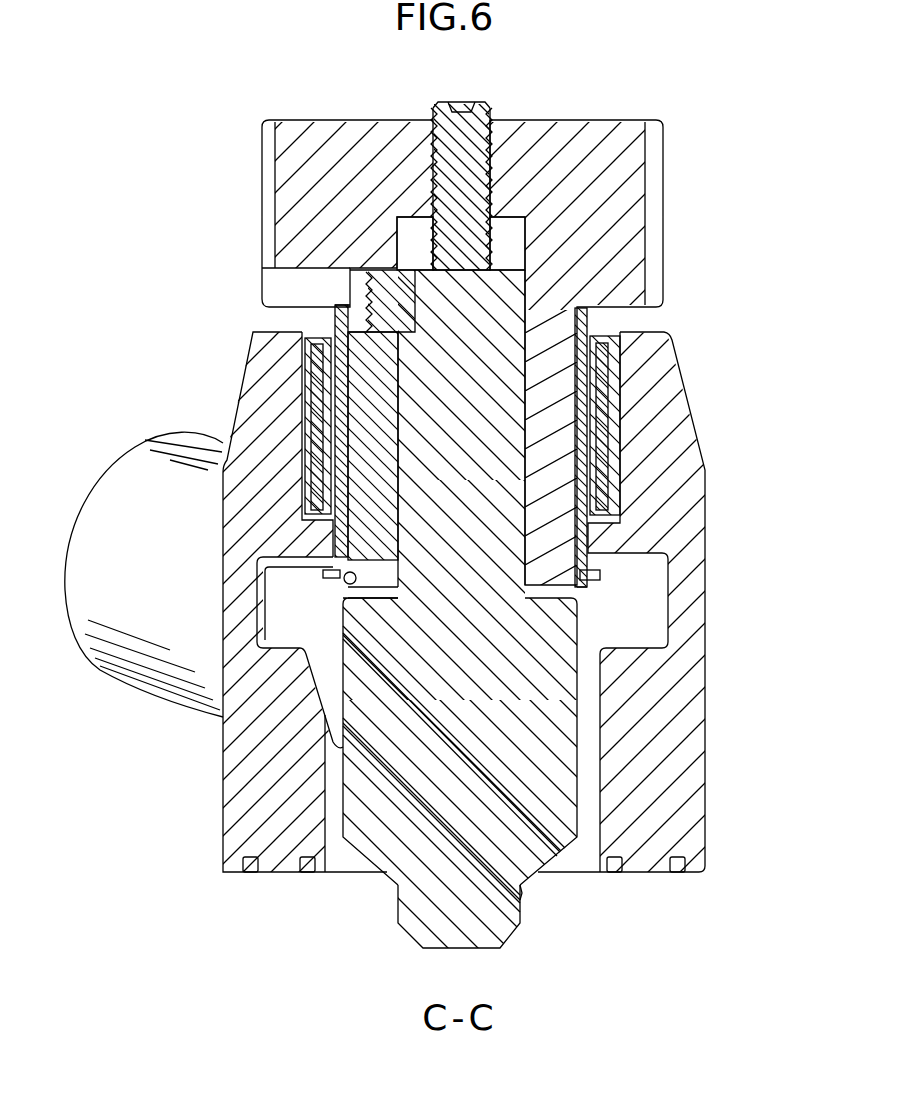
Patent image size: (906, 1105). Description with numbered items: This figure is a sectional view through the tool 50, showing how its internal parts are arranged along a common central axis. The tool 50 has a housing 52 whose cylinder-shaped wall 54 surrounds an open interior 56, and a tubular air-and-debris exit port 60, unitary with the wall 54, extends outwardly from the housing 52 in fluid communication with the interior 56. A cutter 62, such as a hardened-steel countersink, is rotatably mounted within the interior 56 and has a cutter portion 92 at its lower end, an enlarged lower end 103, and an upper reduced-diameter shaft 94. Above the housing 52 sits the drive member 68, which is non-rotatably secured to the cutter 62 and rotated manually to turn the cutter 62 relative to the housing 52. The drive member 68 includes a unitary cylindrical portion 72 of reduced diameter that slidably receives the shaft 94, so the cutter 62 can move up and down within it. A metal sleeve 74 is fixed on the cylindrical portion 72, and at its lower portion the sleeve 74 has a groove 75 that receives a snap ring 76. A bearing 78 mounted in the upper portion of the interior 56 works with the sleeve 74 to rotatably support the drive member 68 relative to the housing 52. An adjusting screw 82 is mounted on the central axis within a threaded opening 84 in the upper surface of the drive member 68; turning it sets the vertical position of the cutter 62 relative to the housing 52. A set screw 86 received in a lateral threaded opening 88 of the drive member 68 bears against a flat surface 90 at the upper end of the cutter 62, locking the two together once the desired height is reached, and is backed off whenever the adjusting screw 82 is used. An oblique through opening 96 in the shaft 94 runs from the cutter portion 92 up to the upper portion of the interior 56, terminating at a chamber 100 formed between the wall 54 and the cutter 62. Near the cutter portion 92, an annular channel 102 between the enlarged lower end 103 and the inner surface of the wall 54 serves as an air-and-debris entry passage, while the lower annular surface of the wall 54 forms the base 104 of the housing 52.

The tool 50 is at (453, 631).
The housing 52 is at (722, 694).
The wall 54 is at (262, 797).
The open interior 56 is at (652, 595).
The air-and-debris exit port 60 is at (83, 603).
The cutter 62 is at (382, 906).
The drive member 68 is at (355, 106).
The cylindrical portion 72 is at (590, 322).
The sleeve 74 is at (603, 566).
The groove 75 is at (355, 588).
The snap ring 76 is at (593, 588).
The bearing 78 is at (330, 360).
The adjusting screw 82 is at (483, 106).
The threaded opening 84 is at (497, 150).
The set screw 86 is at (340, 293).
The lateral threaded opening 88 is at (372, 268).
The flat surface 90 is at (415, 243).
The cutter portion 92 is at (533, 890).
The upper reduced-diameter shaft 94 is at (415, 367).
The oblique through opening 96 is at (530, 868).
The chamber 100 is at (265, 622).
The annular channel 102 is at (330, 803).
The enlarged lower end 103 is at (566, 690).
The base 104 is at (246, 876).